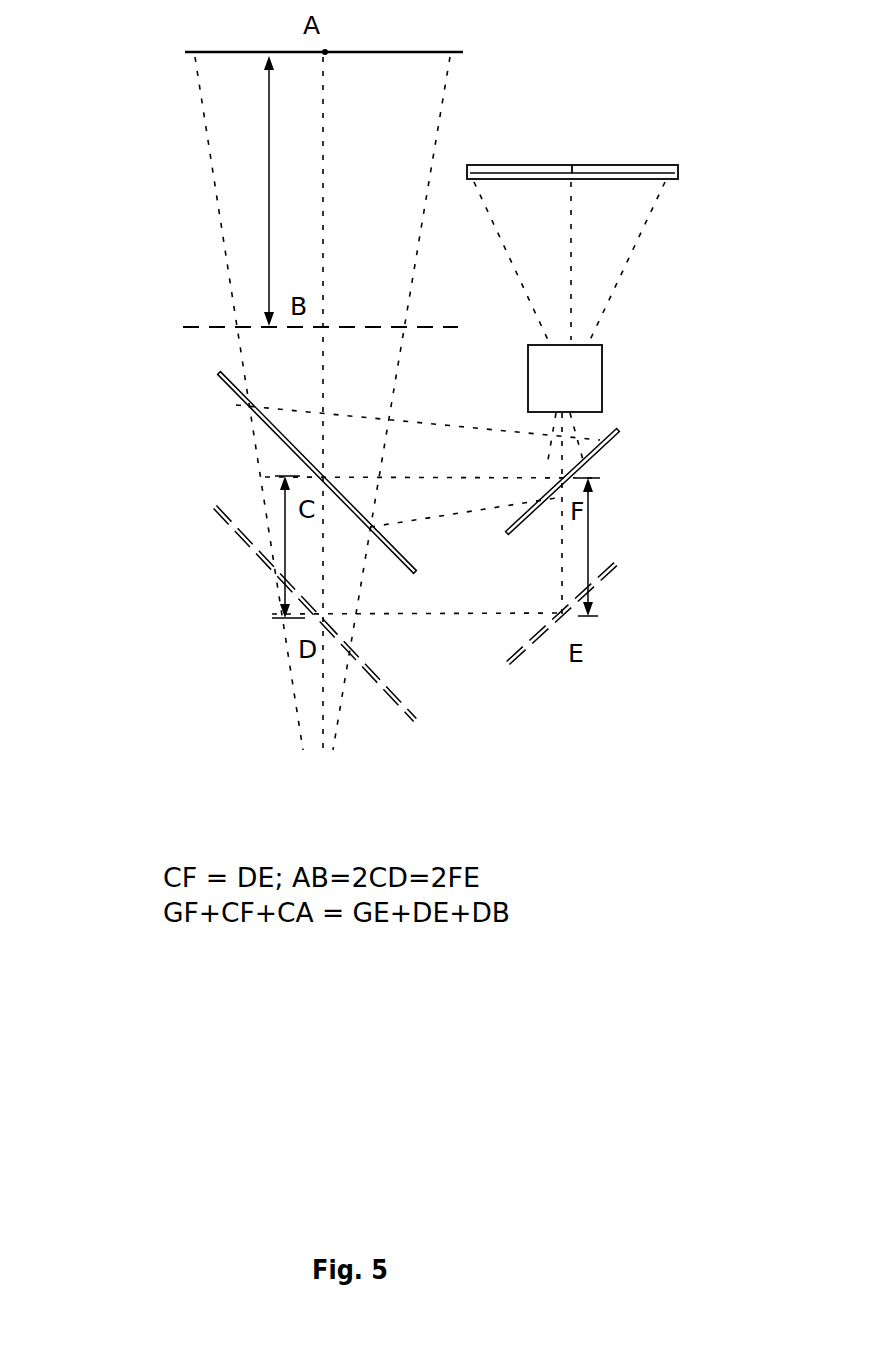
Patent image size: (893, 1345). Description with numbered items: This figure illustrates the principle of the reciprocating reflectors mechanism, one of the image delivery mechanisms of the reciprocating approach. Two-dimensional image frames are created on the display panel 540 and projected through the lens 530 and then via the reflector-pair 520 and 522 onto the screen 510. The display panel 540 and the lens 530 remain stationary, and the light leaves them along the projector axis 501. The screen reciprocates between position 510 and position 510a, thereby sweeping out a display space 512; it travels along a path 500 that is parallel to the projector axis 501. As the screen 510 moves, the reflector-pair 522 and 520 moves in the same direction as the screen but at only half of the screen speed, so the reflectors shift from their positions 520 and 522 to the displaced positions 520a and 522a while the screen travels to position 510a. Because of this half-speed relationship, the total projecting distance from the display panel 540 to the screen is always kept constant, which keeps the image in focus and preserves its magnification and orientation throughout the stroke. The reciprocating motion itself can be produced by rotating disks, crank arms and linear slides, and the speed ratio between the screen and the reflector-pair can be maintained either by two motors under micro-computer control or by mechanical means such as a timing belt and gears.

The screen 510 is at (180, 44).
The display space 512 is at (160, 180).
The path 500 is at (335, 114).
The screen position 510a is at (168, 318).
The reflector 520 is at (228, 405).
The reflector position 520a is at (200, 521).
The reflector 522 is at (636, 441).
The reflector position 522a is at (646, 562).
The lens 530 is at (634, 345).
The display panel 540 is at (708, 166).
The projector axis 501 is at (580, 232).